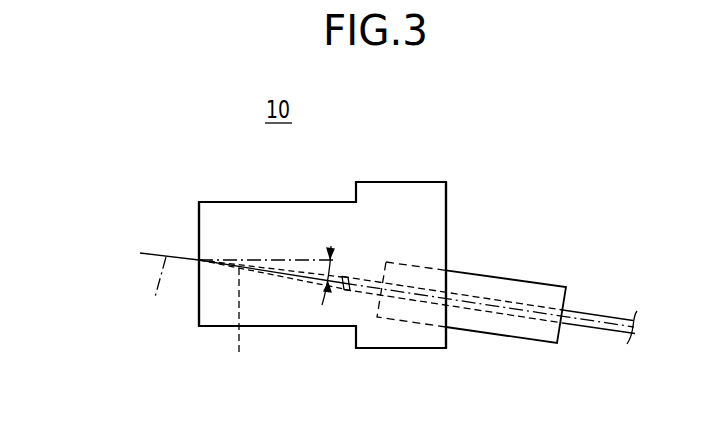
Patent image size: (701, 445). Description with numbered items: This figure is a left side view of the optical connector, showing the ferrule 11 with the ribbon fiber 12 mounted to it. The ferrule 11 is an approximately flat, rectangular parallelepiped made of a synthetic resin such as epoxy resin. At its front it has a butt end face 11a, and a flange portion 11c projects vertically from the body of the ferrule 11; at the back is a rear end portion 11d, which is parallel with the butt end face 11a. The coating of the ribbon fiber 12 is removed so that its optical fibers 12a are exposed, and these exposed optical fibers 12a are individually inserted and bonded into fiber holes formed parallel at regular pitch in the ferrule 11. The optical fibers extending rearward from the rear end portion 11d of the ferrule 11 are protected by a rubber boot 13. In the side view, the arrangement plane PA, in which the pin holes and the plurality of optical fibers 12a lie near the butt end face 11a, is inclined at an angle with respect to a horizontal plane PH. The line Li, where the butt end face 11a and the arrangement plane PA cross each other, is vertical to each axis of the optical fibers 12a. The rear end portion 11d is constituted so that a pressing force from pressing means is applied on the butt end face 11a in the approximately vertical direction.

The ferrule 11 is at (446, 184).
The butt end face 11a is at (199, 219).
The flange portion 11c is at (401, 188).
The rear end portion 11d is at (446, 225).
The ribbon fiber 12 is at (600, 312).
The optical fibers 12a is at (240, 329).
The rubber boot 13 is at (500, 288).
The line Li is at (199, 258).
The horizontal plane PH is at (262, 258).
The arrangement plane PA is at (153, 291).